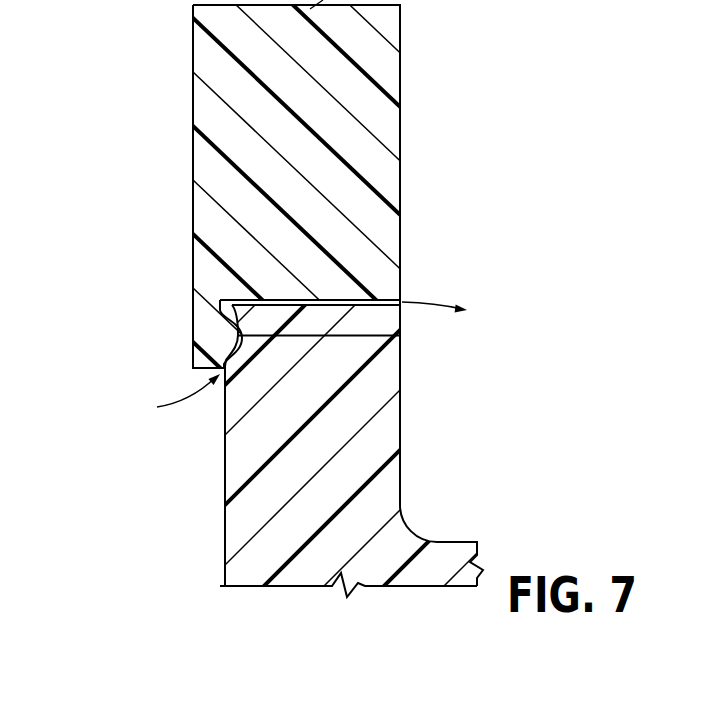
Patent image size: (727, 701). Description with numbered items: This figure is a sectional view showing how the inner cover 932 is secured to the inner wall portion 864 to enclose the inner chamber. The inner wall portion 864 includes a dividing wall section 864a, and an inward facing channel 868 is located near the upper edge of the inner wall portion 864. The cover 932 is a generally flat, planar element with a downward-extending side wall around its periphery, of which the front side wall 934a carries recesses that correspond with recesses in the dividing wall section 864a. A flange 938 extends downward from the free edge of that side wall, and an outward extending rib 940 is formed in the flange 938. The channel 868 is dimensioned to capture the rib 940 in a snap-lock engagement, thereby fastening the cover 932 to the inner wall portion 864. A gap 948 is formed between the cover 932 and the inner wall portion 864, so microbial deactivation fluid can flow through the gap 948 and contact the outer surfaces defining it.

The inner cover 932 is at (403, 46).
The front side wall 934a is at (390, 127).
The outward extending rib 940 is at (400, 336).
The inward facing channel 868 is at (230, 343).
The flange 938 is at (195, 358).
The gap 948 is at (227, 436).
The inner wall portion 864 is at (404, 467).
The dividing wall section 864a is at (387, 422).